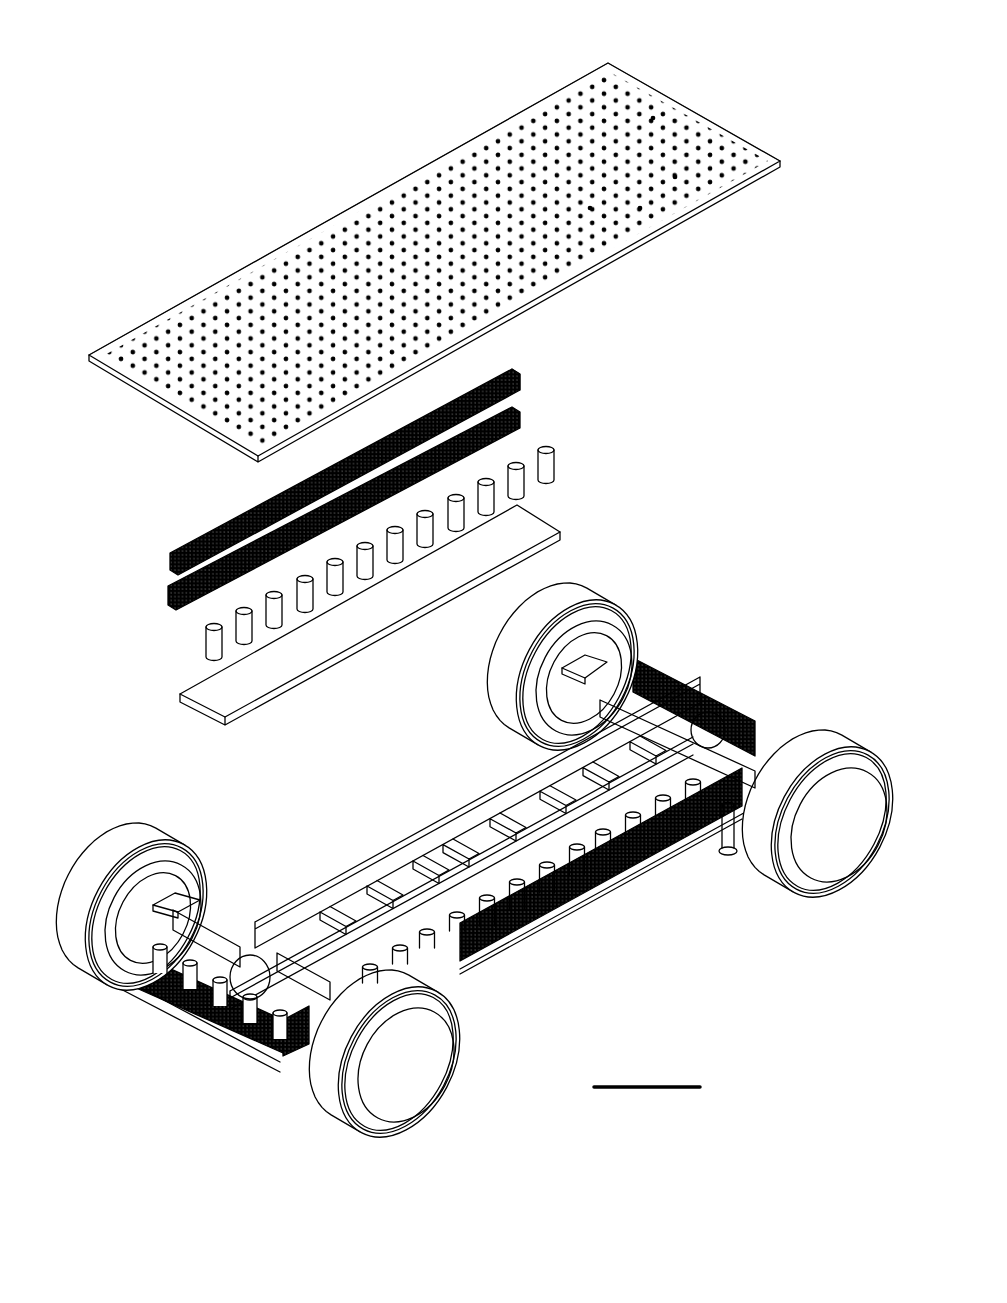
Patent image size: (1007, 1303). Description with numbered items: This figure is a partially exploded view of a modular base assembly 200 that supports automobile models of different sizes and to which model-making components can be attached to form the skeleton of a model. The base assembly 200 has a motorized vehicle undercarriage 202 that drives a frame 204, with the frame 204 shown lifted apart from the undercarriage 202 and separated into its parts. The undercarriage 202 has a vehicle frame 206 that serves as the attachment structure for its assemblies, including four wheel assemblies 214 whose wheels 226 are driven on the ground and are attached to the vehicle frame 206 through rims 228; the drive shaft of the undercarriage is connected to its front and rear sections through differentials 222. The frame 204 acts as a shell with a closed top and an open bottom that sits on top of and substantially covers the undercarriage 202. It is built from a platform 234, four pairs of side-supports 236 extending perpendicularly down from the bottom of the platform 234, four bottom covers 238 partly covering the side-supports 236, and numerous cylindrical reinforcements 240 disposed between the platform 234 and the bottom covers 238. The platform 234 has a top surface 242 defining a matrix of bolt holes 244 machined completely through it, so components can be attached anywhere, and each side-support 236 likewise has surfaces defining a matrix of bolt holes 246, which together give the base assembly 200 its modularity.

The modular base assembly 200 is at (82, 314).
The motorized vehicle undercarriage 202 is at (486, 812).
The frame 204 is at (744, 131).
The vehicle frame 206 is at (520, 790).
The wheel assembly 214 is at (486, 849).
The differential 222 is at (281, 955).
The wheel 226 is at (145, 835).
The rim 228 is at (172, 885).
The platform 234 is at (707, 117).
The side-support 236 is at (457, 690).
The bottom cover 238 is at (520, 530).
The reinforcement 240 is at (370, 578).
The top surface 242 is at (653, 115).
The holes 244 is at (675, 177).
The holes 246 is at (518, 375).